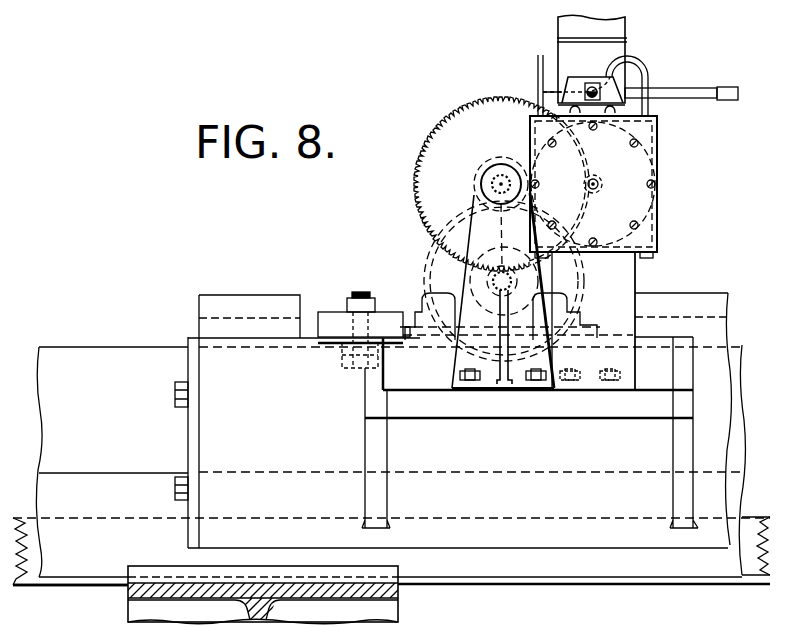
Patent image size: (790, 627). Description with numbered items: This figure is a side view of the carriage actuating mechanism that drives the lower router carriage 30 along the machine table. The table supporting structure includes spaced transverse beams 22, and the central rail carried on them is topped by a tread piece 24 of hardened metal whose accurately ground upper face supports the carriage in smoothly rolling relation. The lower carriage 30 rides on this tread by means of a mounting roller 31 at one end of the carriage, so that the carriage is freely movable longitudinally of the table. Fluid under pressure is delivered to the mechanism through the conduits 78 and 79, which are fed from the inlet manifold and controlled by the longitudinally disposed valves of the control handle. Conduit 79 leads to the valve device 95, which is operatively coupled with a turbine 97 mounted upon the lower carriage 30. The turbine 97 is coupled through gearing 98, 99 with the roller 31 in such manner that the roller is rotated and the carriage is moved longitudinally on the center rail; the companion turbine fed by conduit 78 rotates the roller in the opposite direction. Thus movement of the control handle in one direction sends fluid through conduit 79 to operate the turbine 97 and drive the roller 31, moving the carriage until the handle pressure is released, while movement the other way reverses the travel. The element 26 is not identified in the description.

The transverse beam 22 is at (137, 608).
The tread piece 24 is at (125, 347).
The base rail 26 is at (32, 578).
The lower router carriage 30 is at (690, 293).
The mounting roller 31 is at (442, 250).
The fluid conduit 78 is at (730, 90).
The fluid conduit 79 is at (673, 90).
The valve device 95 is at (613, 49).
The turbine 97 is at (643, 177).
The gearing 98 is at (416, 178).
The gearing 99 is at (418, 265).